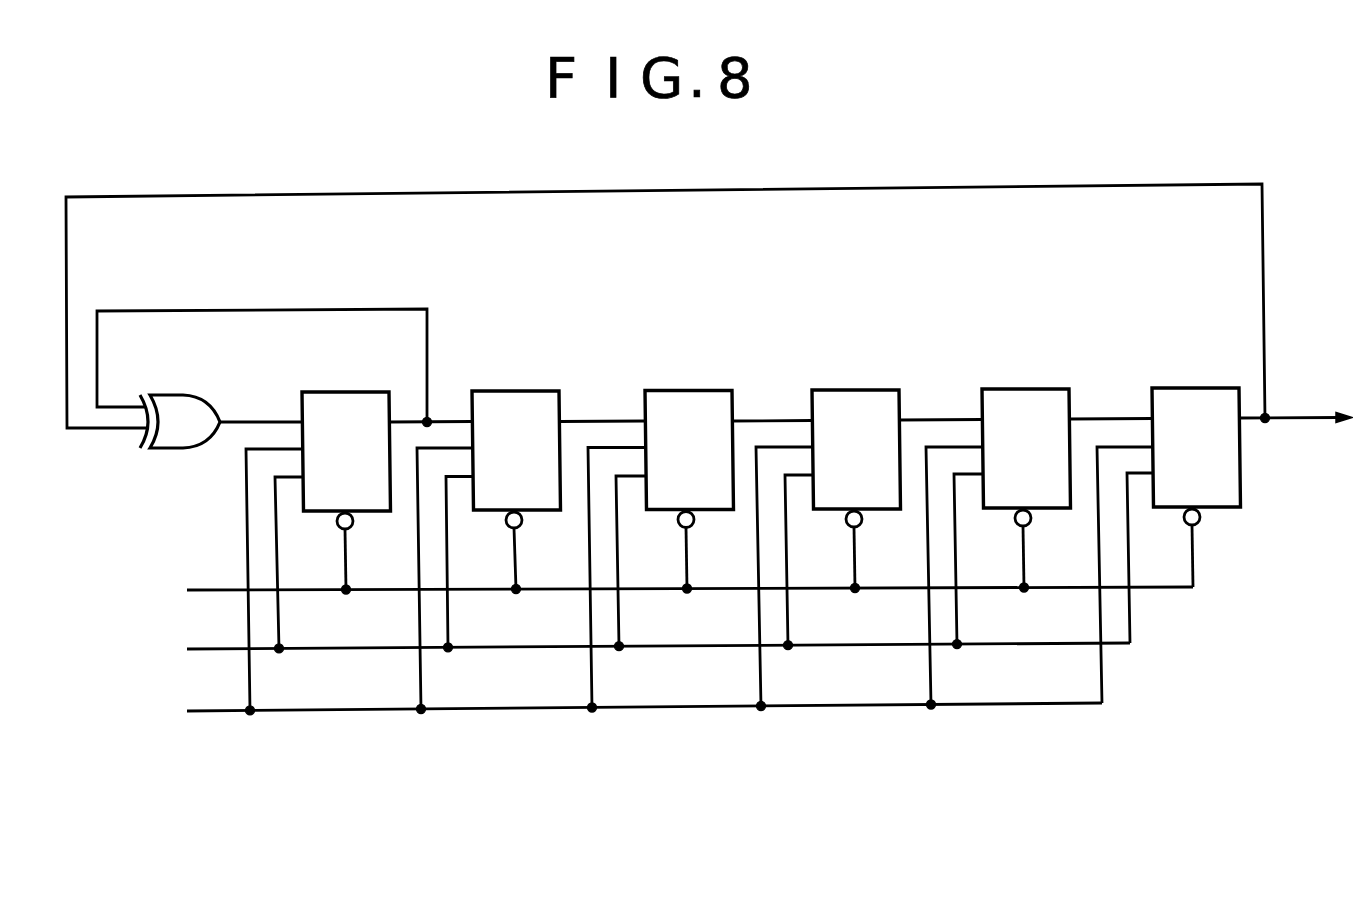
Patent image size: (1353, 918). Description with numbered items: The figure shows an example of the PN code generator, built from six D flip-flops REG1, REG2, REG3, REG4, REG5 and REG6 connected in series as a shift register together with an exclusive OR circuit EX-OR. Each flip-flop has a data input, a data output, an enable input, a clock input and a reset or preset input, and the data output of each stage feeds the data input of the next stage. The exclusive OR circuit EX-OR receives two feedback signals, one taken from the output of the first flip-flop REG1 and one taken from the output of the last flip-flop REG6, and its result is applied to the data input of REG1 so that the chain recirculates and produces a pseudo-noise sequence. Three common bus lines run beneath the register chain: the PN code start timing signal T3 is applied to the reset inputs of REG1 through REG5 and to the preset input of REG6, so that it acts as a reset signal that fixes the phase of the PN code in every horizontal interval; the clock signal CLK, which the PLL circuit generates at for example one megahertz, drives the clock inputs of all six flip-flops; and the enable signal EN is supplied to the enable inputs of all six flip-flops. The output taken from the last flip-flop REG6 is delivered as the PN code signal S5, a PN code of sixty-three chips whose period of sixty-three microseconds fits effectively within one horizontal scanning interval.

The exclusive OR circuit EX-OR is at (198, 393).
The D flip-flop REG1 is at (343, 391).
The D flip-flop REG2 is at (513, 390).
The D flip-flop REG3 is at (684, 390).
The D flip-flop REG4 is at (851, 389).
The D flip-flop REG5 is at (1024, 388).
The D flip-flop REG6 is at (1194, 387).
The PN code output signal S5 is at (1296, 404).
The PN code start timing signal T3 is at (690, 574).
The clock signal CLK is at (658, 633).
The enable signal EN is at (644, 695).